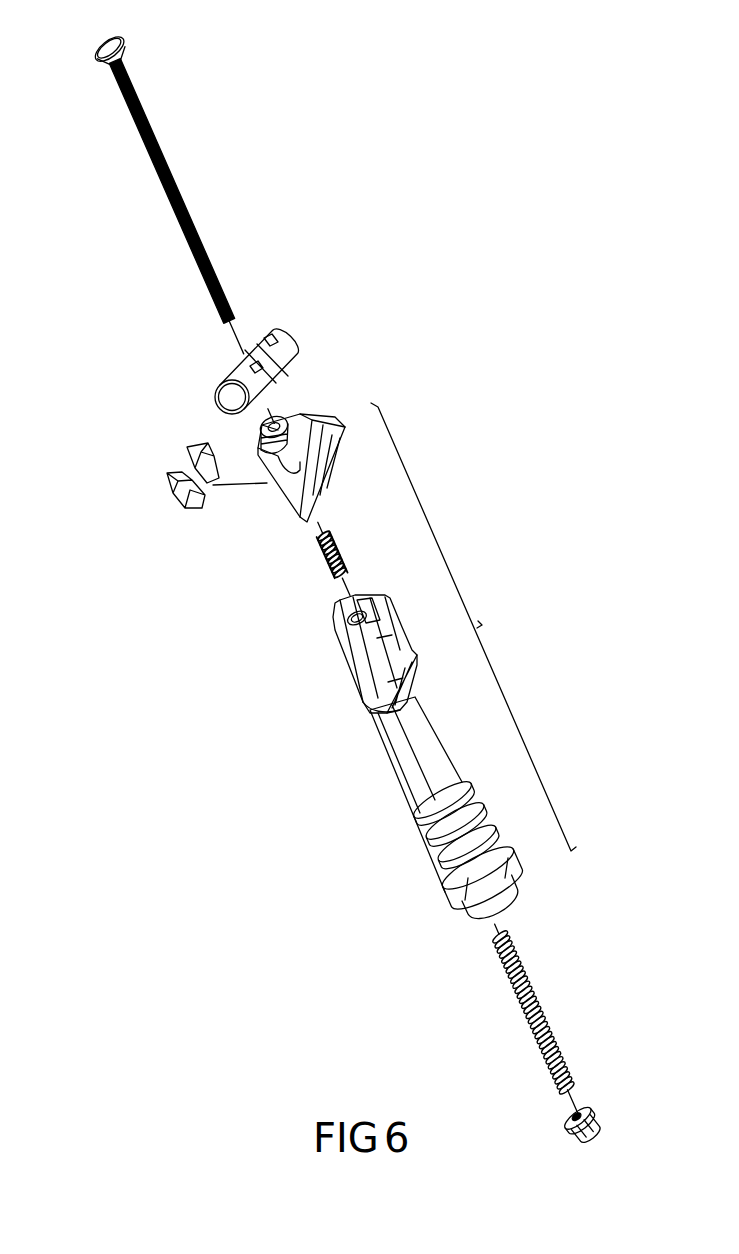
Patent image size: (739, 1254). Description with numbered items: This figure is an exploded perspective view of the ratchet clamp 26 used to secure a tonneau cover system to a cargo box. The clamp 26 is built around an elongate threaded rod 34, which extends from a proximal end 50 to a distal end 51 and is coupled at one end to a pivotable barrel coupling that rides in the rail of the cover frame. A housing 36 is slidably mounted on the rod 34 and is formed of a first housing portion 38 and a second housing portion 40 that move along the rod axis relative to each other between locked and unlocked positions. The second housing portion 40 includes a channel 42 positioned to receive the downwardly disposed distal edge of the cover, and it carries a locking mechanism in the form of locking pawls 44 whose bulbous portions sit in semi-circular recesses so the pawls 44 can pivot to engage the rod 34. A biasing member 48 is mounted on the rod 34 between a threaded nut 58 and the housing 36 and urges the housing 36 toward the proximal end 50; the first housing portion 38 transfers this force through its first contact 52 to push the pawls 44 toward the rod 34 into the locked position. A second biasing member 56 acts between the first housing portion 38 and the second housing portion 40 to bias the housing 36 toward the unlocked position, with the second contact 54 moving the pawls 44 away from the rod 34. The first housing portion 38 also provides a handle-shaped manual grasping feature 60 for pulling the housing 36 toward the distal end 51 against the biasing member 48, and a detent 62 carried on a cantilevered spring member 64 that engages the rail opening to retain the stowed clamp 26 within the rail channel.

The ratchet clamp 26 is at (392, 311).
The rod 34 is at (173, 172).
The housing 36 is at (491, 621).
The first housing portion 38 is at (387, 654).
The second housing portion 40 is at (342, 455).
The channel 42 is at (320, 430).
The locking pawls 44 is at (176, 452).
The biasing member 48 is at (547, 1007).
The proximal end 50 is at (108, 50).
The distal end 51 is at (237, 325).
The first contact 52 is at (385, 638).
The second contact 54 is at (365, 655).
The second biasing member 56 is at (325, 558).
The threaded nut 58 is at (603, 1127).
The manual grasping feature 60 is at (413, 760).
The detent 62 is at (467, 917).
The spring member 64 is at (450, 892).